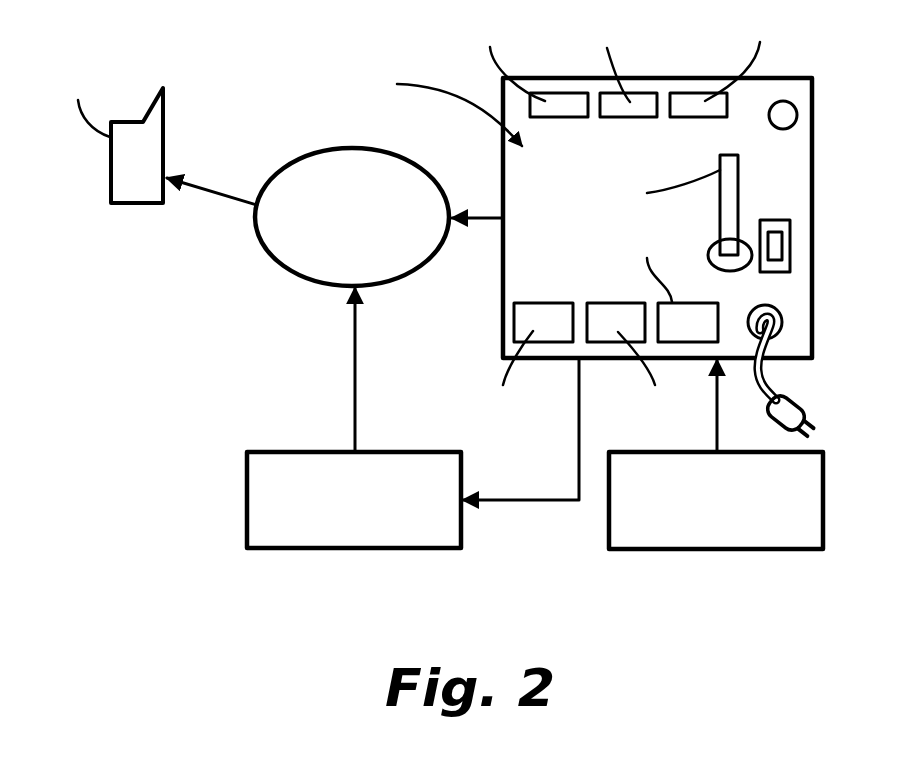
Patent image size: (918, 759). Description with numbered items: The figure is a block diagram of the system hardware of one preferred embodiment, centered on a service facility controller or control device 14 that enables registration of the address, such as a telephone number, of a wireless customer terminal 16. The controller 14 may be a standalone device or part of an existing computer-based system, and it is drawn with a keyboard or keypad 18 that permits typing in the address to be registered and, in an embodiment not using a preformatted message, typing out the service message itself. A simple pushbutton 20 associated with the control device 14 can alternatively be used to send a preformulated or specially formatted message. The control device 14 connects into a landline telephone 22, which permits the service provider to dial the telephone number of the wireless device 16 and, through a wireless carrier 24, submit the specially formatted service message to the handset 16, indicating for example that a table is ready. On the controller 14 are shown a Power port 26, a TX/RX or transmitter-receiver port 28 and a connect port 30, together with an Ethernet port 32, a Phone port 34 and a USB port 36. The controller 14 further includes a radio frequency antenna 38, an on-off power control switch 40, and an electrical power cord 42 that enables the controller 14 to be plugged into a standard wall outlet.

The service facility controller 14 is at (597, 227).
The wireless customer terminal 16 is at (98, 108).
The keyboard 18 is at (716, 537).
The pushbutton 20 is at (821, 81).
The landline telephone 22 is at (359, 534).
The wireless carrier 24 is at (336, 223).
The Power port 26 is at (522, 91).
The TX/RX port 28 is at (621, 92).
The connect port 30 is at (730, 86).
The Ethernet port 32 is at (518, 346).
The Phone port 34 is at (624, 318).
The USB port 36 is at (674, 274).
The RF antenna 38 is at (705, 179).
The on-off power control switch 40 is at (827, 255).
The electrical power cord 42 is at (815, 373).